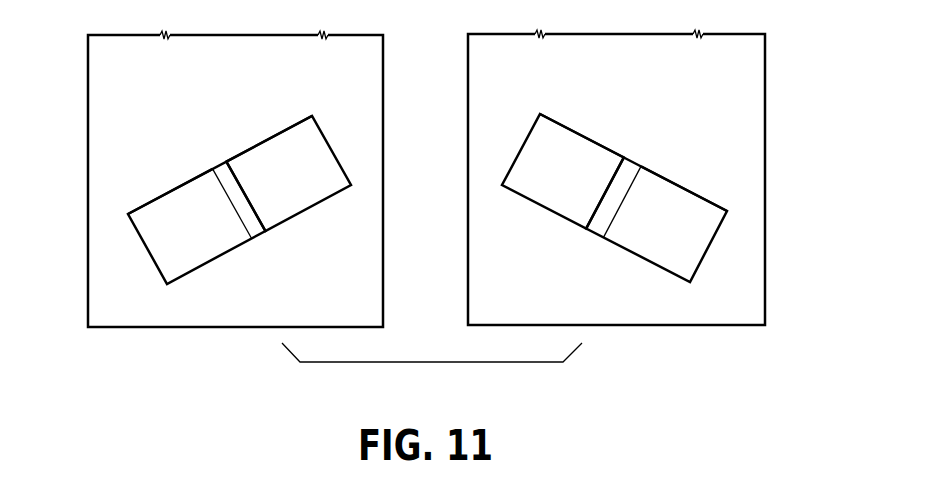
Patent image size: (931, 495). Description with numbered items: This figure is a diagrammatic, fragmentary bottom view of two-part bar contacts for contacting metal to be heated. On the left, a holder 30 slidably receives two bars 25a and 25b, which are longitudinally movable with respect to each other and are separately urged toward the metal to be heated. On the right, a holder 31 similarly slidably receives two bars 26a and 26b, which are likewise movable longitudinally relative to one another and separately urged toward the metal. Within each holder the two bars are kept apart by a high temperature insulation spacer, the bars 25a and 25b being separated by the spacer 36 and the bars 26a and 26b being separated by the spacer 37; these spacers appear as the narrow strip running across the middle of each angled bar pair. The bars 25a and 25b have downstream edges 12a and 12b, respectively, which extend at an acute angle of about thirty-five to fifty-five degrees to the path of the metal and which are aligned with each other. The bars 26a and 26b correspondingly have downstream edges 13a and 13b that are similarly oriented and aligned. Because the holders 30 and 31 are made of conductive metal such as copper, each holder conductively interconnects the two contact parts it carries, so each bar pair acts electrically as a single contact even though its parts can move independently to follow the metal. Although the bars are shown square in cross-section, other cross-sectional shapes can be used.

The holder 30 is at (103, 129).
The holder 31 is at (763, 120).
The downstream edge 12a is at (208, 255).
The downstream edge 12b is at (318, 193).
The bar 25a is at (170, 202).
The bar 25b is at (280, 143).
The high temperature insulation spacer 36 is at (255, 228).
The downstream edge 13a is at (538, 195).
The downstream edge 13b is at (643, 248).
The bar 26a is at (573, 140).
The bar 26b is at (680, 195).
The high temperature insulation spacer 37 is at (597, 227).